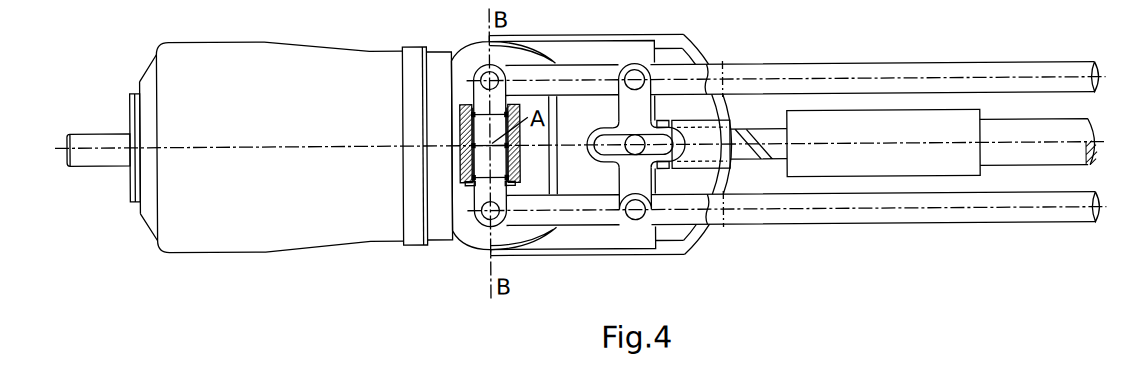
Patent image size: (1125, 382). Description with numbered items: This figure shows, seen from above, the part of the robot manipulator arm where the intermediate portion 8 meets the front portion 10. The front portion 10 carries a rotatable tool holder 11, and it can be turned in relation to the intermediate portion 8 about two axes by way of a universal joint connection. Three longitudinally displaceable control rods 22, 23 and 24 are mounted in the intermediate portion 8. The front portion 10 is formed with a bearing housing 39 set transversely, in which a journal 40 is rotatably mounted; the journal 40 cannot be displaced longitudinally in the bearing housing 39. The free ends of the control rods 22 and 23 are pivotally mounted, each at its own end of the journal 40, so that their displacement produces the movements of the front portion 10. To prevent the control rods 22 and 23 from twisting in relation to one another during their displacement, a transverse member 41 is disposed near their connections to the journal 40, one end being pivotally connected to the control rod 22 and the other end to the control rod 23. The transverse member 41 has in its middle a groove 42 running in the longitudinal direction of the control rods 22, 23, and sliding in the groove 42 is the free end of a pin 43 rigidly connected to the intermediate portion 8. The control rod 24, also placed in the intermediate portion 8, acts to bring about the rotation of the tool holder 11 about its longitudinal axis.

The intermediate portion 8 is at (618, 245).
The front portion 10 is at (470, 243).
The tool holder 11 is at (107, 140).
The control rod 22 is at (1023, 216).
The control rod 23 is at (1022, 86).
The control rod 24 is at (990, 156).
The bearing housing 39 is at (462, 170).
The journal 40 is at (482, 99).
The transverse member 41 is at (631, 118).
The groove 42 is at (618, 147).
The pin 43 is at (639, 142).